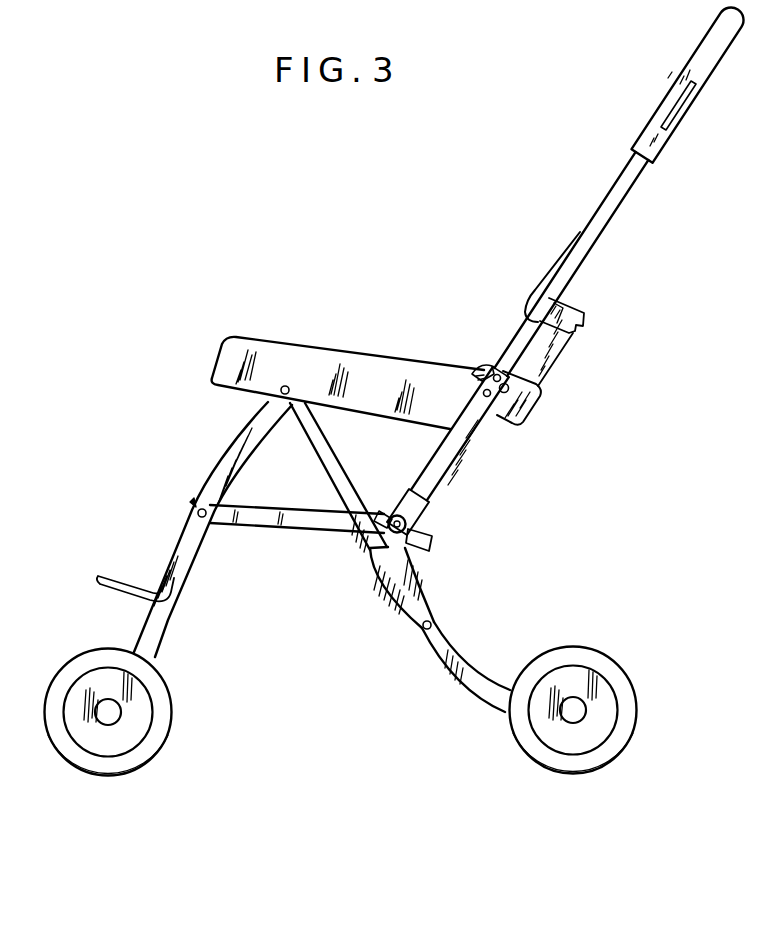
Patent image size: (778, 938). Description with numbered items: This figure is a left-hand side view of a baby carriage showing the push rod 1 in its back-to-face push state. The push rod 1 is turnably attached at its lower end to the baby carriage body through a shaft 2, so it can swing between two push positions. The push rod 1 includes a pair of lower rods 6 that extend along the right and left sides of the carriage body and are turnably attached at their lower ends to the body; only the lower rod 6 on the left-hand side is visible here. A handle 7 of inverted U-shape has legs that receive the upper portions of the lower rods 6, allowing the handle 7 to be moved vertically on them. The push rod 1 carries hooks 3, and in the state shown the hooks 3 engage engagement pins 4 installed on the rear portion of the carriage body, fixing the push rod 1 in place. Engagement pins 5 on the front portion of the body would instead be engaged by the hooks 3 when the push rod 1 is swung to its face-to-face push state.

The push rod 1 is at (600, 172).
The shaft 2 is at (413, 519).
The hook 3 is at (483, 370).
The engagement pin 4 is at (503, 397).
The engagement pin 5 is at (284, 386).
The lower rod 6 is at (582, 252).
The handle 7 is at (698, 62).